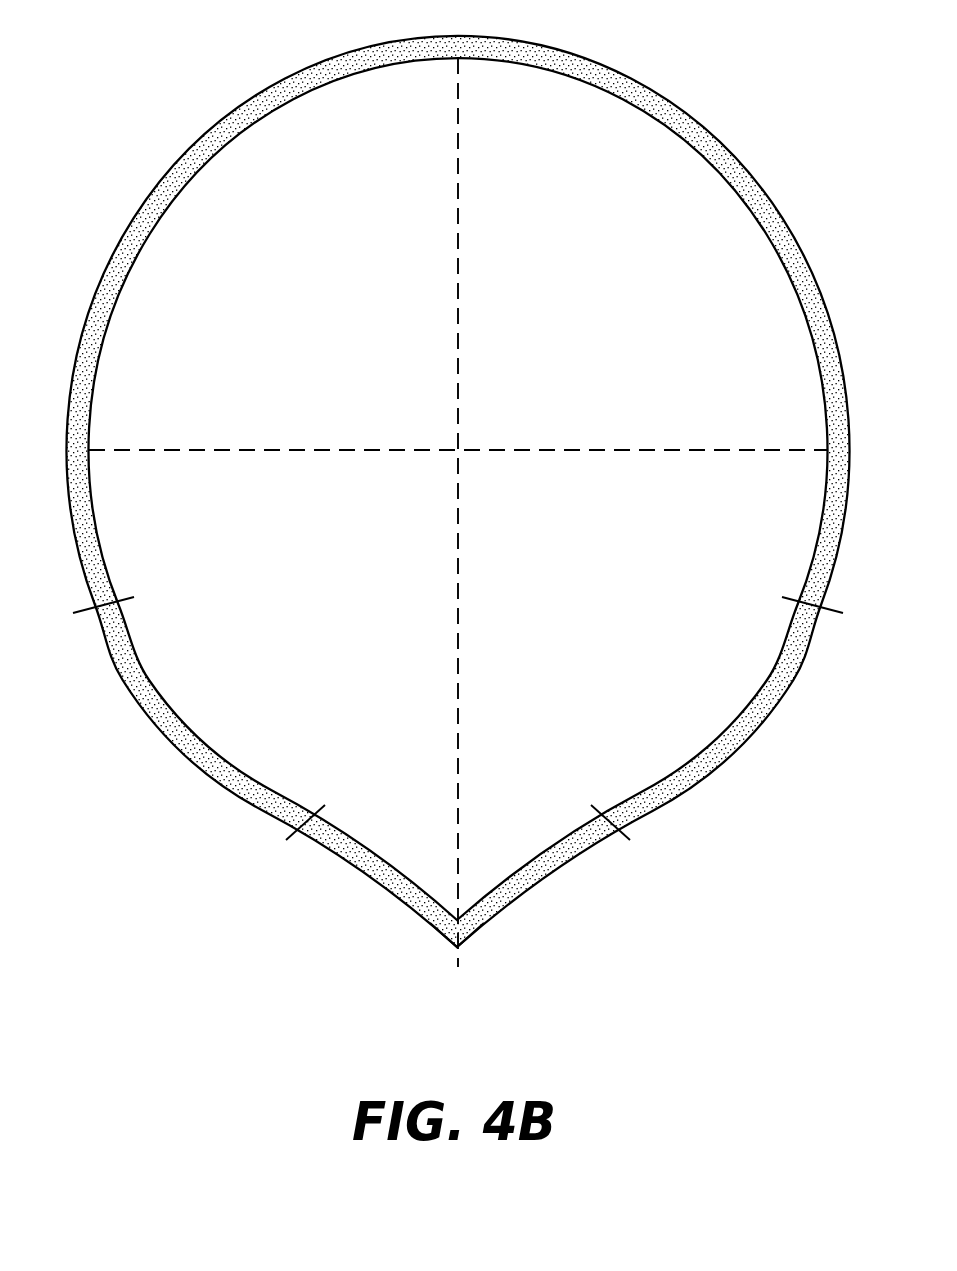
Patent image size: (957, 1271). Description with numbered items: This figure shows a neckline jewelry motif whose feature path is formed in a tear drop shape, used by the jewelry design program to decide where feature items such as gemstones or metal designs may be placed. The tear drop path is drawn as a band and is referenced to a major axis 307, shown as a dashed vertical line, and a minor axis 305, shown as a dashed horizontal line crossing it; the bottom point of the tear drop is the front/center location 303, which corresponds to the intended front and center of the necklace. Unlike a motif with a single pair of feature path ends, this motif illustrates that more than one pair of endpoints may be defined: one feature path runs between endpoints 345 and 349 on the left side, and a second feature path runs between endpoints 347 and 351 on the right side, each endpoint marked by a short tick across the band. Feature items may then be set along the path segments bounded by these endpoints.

The front/center location 303 is at (457, 947).
The minor axis 305 is at (684, 456).
The major axis 307 is at (461, 571).
The feature path endpoint 345 is at (81, 613).
The feature path endpoint 347 is at (835, 613).
The feature path endpoint 349 is at (300, 838).
The feature path endpoint 351 is at (616, 838).